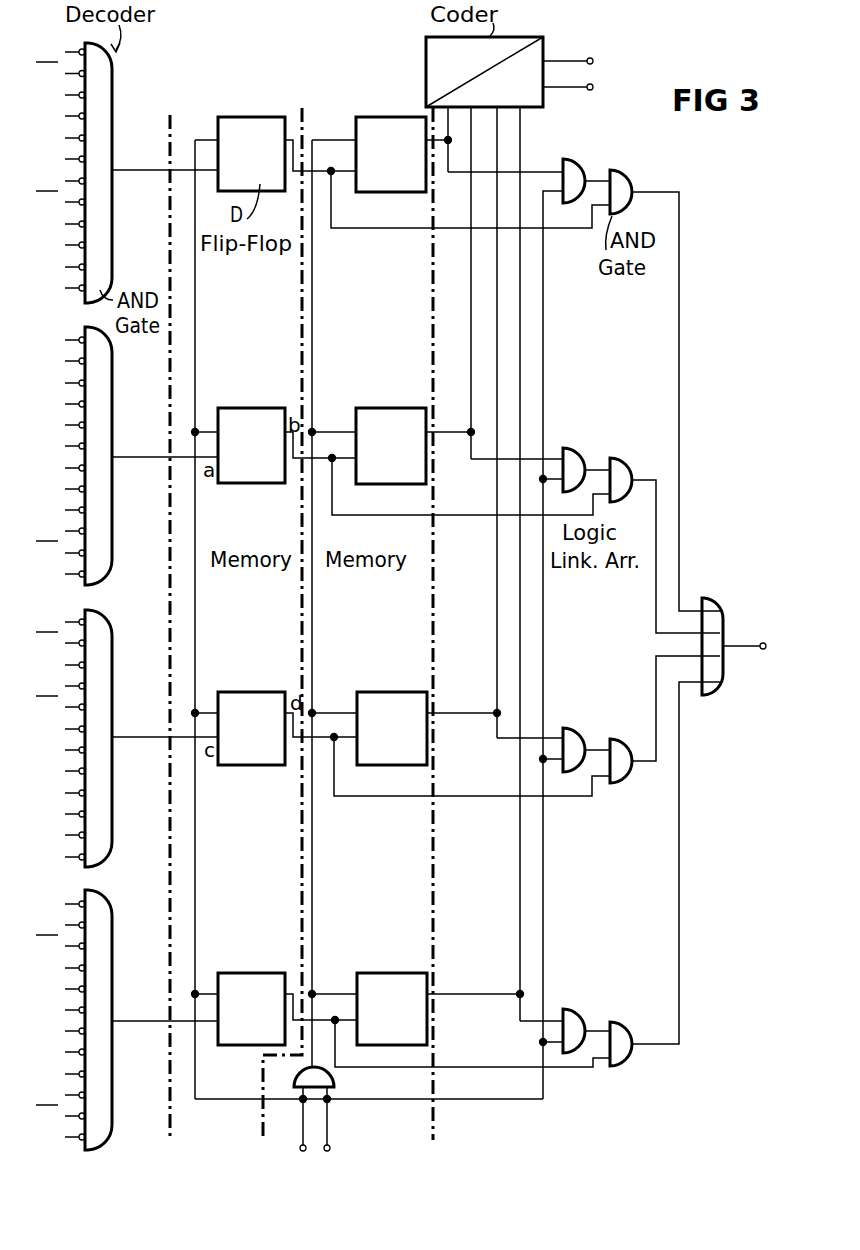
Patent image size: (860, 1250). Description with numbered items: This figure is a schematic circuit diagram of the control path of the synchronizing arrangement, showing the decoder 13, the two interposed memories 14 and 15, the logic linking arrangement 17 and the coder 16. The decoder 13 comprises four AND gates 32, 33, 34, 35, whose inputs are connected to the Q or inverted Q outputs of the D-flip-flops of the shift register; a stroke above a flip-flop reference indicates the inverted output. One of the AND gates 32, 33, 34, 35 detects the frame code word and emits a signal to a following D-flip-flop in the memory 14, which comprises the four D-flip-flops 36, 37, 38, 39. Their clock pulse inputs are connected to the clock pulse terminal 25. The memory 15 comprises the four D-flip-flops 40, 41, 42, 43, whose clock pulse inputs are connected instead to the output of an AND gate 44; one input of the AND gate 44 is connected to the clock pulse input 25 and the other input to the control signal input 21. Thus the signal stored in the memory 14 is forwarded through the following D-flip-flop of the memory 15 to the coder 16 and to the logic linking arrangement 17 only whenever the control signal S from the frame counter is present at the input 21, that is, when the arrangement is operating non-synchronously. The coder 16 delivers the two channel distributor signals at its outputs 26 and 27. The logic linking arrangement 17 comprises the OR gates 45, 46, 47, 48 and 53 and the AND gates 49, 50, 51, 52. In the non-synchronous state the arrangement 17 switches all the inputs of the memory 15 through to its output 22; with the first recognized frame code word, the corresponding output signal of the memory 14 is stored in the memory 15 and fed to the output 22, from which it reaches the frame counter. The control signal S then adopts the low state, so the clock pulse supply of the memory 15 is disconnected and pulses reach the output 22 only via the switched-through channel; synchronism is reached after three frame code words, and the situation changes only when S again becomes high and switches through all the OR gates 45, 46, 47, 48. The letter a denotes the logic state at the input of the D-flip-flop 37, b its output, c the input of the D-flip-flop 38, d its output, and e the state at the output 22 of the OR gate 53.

The decoder 13 is at (147, 597).
The memory 14 is at (258, 597).
The memory 15 is at (382, 597).
The coder 16 is at (494, 529).
The logic linking arrangement 17 is at (607, 599).
The control signal input 21 is at (341, 1125).
The output 22 is at (746, 652).
The clock pulse terminal 25 is at (290, 1125).
The output 26 is at (581, 52).
The output 27 is at (581, 95).
The AND gate 32 is at (127, 170).
The AND gate 33 is at (127, 456).
The AND gate 34 is at (127, 738).
The AND gate 35 is at (127, 1020).
The D-flip-flop 36 is at (275, 139).
The D-flip-flop 37 is at (274, 431).
The D-flip-flop 38 is at (274, 713).
The D-flip-flop 39 is at (274, 993).
The D-flip-flop 40 is at (461, 158).
The D-flip-flop 41 is at (460, 447).
The D-flip-flop 42 is at (460, 728).
The D-flip-flop 43 is at (460, 1004).
The AND gate 44 is at (369, 1115).
The OR gate 45 is at (586, 169).
The OR gate 46 is at (586, 458).
The OR gate 47 is at (586, 736).
The OR gate 48 is at (586, 1020).
The AND gate 49 is at (665, 379).
The AND gate 50 is at (665, 535).
The AND gate 51 is at (665, 719).
The AND gate 52 is at (665, 874).
The OR gate 53 is at (710, 631).